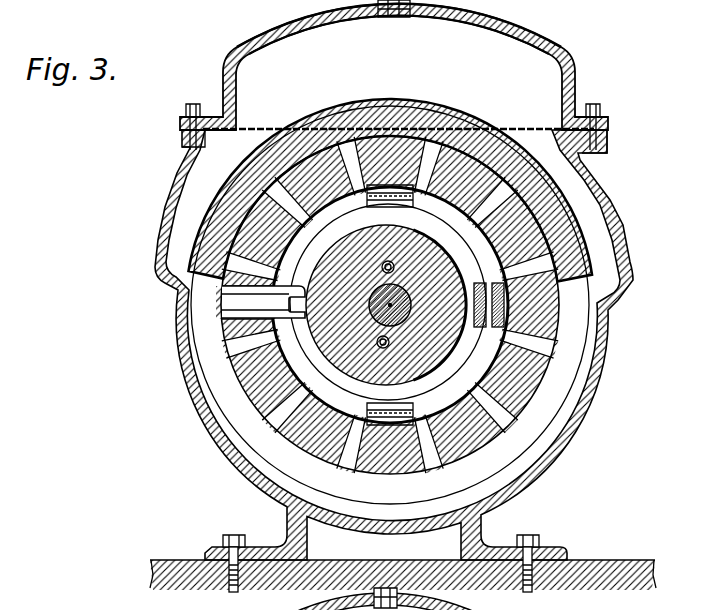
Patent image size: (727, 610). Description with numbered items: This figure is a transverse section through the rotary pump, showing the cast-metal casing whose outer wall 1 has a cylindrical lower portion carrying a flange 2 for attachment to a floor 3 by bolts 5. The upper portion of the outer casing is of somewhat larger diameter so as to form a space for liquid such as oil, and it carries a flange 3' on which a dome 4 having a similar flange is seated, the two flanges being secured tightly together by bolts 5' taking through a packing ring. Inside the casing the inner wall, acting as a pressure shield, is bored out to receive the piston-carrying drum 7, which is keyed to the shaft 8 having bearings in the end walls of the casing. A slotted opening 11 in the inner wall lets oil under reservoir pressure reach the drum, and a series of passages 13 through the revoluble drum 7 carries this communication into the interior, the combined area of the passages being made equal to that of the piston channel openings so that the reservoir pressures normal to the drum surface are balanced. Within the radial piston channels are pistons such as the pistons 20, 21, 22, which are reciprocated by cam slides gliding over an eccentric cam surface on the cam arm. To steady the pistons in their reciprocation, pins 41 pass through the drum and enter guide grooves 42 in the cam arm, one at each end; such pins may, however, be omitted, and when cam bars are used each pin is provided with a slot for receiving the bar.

The outer wall 1 is at (554, 230).
The flange 2 is at (208, 549).
The floor 3 is at (403, 564).
The dome 4 is at (574, 80).
The bolts 5 is at (387, 551).
The flange bolt 5' is at (394, 127).
The flange 3' is at (395, 149).
The piston-carrying drum 7 is at (461, 153).
The shaft 8 is at (407, 293).
The slotted opening 11 is at (551, 393).
The passages 13 is at (233, 337).
The piston 20 is at (402, 403).
The piston 21 is at (483, 328).
The piston 22 is at (400, 207).
The pins 41 is at (247, 300).
The guide grooves 42 is at (297, 257).